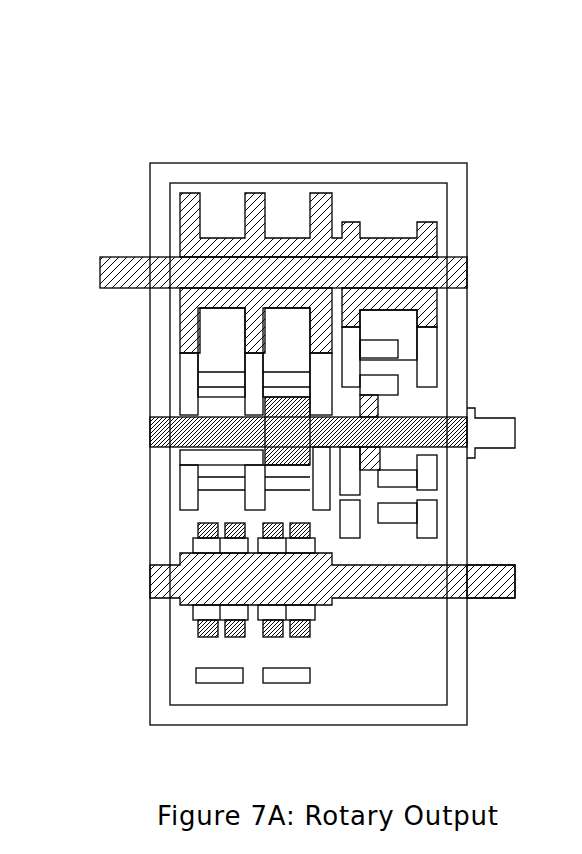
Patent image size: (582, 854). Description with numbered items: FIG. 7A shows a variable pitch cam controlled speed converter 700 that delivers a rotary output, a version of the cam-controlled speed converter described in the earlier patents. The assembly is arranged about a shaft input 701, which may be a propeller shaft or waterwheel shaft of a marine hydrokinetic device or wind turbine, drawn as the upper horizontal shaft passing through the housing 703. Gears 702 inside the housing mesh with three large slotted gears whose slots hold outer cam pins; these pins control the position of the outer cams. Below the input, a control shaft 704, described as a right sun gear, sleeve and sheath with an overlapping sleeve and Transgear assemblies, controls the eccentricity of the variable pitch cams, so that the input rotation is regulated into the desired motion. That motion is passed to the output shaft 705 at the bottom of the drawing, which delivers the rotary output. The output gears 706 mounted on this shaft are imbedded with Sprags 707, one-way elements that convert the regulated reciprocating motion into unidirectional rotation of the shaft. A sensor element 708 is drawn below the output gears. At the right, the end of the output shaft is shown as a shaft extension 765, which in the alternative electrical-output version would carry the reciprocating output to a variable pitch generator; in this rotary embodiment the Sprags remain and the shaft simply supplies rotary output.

The rotary output assembly 700 is at (197, 92).
The shaft input 701 is at (125, 250).
The gears 702 is at (262, 188).
The housing 703 is at (390, 212).
The control shaft 704 is at (498, 407).
The output shaft 705 is at (480, 585).
The output gears 706 is at (300, 637).
The Sprags 707 is at (305, 613).
The sensor 708 is at (290, 690).
The shaft extension 765 is at (581, 538).